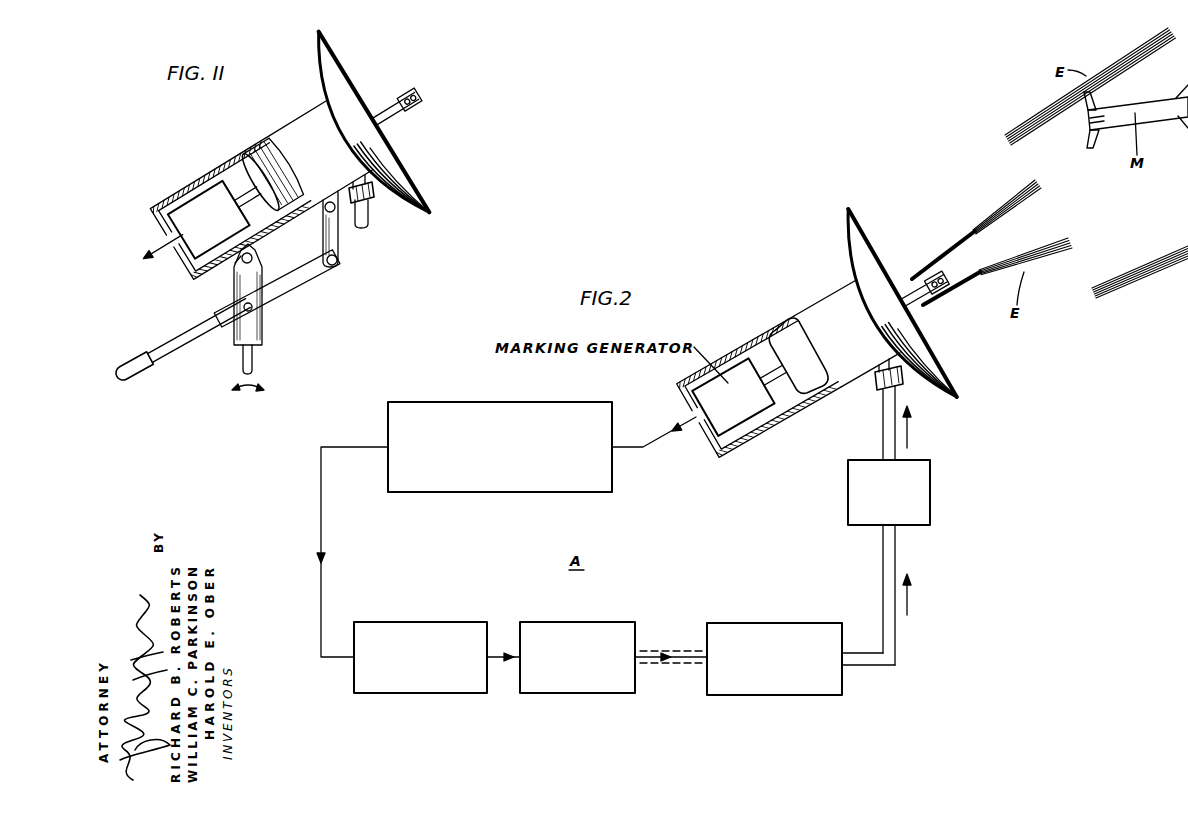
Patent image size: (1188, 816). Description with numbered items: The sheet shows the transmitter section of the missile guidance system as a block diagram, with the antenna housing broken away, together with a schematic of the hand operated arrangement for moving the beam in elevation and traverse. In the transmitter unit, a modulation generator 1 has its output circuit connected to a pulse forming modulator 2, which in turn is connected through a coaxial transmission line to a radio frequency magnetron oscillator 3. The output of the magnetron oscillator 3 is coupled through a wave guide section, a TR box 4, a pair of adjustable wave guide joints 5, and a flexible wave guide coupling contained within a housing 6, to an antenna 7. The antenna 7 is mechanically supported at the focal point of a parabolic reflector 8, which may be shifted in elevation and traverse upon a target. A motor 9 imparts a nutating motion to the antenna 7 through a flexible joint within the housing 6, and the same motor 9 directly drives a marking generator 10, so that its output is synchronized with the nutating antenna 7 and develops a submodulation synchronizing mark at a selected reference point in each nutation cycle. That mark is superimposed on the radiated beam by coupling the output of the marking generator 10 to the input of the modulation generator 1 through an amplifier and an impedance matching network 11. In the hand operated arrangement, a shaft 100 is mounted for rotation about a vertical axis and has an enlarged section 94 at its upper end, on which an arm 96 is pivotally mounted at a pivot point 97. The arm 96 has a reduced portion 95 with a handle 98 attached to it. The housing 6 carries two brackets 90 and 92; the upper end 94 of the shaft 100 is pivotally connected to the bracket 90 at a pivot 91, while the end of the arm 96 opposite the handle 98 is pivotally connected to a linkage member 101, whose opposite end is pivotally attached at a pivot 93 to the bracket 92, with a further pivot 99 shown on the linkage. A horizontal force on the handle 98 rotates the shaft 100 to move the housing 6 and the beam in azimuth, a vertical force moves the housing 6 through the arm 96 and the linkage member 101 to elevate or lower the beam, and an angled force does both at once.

In FIG. 2, the modulation generator 1 is at (397, 682).
In FIG. 2, the pulse forming modulator 2 is at (553, 680).
In FIG. 2, the radio frequency magnetron oscillator 3 is at (758, 685).
In FIG. 2, the TR box 4 is at (913, 514).
In FIG. 11, the adjustable wave guide joints 5 is at (373, 197).
In FIG. 2, the adjustable wave guide joints 5 is at (900, 381).
In FIG. 11, the housing 6 is at (307, 123).
In FIG. 2, the housing 6 is at (838, 312).
In FIG. 11, the antenna 7 is at (413, 99).
In FIG. 2, the antenna 7 is at (938, 279).
In FIG. 11, the parabolic reflector 8 is at (343, 84).
In FIG. 2, the parabolic reflector 8 is at (862, 252).
In FIG. 11, the motor 9 is at (268, 160).
In FIG. 2, the motor 9 is at (793, 343).
In FIG. 11, the marking generator 10 is at (203, 207).
In FIG. 2, the marking generator 10 is at (738, 412).
In FIG. 2, the amplifier and impedance matching network 11 is at (577, 480).
In FIG. 11, the bracket 90 is at (256, 257).
In FIG. 11, the pivotal connection 91 is at (234, 259).
In FIG. 11, the bracket 92 is at (322, 208).
In FIG. 11, the pivotal attachment 93 is at (342, 212).
In FIG. 11, the enlarged section 94 is at (258, 327).
In FIG. 11, the reduced portion 95 is at (203, 339).
In FIG. 11, the arm 96 is at (300, 283).
In FIG. 11, the pivot point 97 is at (232, 309).
In FIG. 11, the handle 98 is at (148, 360).
In FIG. 11, the pivot pin 99 is at (332, 266).
In FIG. 11, the shaft 100 is at (253, 372).
In FIG. 11, the linkage member 101 is at (338, 254).